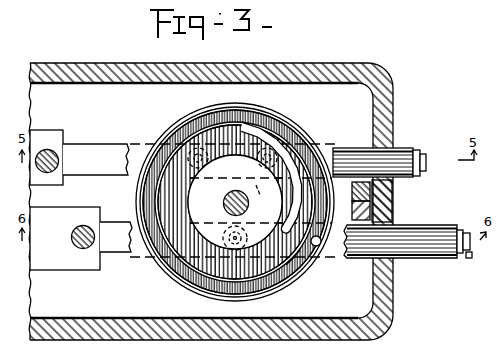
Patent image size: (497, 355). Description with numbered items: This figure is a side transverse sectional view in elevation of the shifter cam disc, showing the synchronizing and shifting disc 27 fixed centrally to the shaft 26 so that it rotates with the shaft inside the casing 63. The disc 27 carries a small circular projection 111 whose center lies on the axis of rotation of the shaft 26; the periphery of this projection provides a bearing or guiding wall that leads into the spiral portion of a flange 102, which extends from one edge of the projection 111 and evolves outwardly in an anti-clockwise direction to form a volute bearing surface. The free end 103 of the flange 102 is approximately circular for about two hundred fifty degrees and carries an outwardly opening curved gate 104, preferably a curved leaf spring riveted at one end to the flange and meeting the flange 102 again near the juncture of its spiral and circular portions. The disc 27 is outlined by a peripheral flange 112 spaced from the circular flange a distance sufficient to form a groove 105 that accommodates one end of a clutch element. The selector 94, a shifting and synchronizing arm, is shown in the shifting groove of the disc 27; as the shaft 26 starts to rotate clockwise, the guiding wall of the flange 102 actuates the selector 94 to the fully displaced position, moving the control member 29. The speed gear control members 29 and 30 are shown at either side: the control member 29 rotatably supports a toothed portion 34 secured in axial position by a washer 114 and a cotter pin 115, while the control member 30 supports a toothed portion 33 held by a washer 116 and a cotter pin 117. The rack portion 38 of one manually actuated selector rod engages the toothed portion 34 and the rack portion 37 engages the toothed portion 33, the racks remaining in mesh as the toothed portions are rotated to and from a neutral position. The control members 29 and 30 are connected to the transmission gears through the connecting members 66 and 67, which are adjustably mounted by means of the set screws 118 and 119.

The shaft 26 is at (224, 204).
The shifter disc member 27 is at (272, 290).
The control member 29 is at (115, 228).
The control member 30 is at (86, 150).
The toothed portion 33 is at (397, 152).
The toothed portion 34 is at (419, 250).
The rack portion 37 is at (392, 190).
The rack portion 38 is at (392, 212).
The casing 63 is at (392, 300).
The connecting member 66 is at (42, 136).
The connecting member 67 is at (37, 263).
The selector 94 is at (320, 247).
The flange 102 is at (288, 260).
The free end of the flange 103 is at (318, 155).
The curved gate 104 is at (298, 136).
The groove 105 is at (172, 263).
The circular projection 111 is at (265, 198).
The peripheral flange 112 is at (263, 106).
The washer 114 is at (467, 228).
The cotter pin 115 is at (467, 259).
The washer 116 is at (426, 160).
The cotter pin 117 is at (422, 153).
The set screw 118 is at (46, 168).
The set screw 119 is at (70, 245).